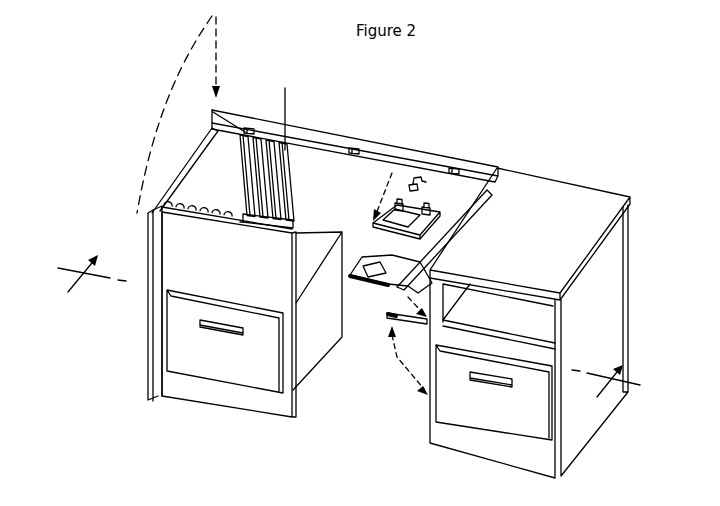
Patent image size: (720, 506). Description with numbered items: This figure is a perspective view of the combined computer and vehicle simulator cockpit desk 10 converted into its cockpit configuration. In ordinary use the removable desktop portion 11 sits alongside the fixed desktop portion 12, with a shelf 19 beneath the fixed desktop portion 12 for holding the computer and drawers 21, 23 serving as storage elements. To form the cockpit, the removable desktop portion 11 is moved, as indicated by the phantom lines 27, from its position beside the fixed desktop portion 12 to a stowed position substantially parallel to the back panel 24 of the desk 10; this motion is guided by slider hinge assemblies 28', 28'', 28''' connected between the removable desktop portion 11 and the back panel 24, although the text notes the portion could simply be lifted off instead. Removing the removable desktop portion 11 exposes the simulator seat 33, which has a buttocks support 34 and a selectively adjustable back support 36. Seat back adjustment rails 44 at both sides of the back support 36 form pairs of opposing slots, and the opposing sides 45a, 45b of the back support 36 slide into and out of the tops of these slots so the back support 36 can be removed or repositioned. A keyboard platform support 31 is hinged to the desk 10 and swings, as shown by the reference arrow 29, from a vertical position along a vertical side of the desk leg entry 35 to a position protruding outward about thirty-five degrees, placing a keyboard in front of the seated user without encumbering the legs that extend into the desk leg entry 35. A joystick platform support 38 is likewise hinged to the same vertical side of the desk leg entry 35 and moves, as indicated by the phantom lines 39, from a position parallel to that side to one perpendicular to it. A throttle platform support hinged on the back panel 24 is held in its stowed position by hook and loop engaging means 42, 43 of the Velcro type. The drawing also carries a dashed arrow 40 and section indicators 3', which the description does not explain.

The desk 10 is at (604, 143).
The removable desktop portion 11 is at (418, 143).
The fixed desktop portion 12 is at (567, 202).
The shelf 19 is at (520, 318).
The drawer 21 is at (492, 408).
The drawer 23 is at (212, 355).
The back panel 24 is at (360, 332).
The phantom lines 27 is at (167, 95).
The slider hinge assembly 28' is at (256, 112).
The slider hinge assembly 28'' is at (372, 129).
The slider hinge assembly 28''' is at (502, 149).
The reference arrow 29 is at (403, 322).
The keyboard platform support 31 is at (450, 225).
The simulator seat 33 is at (297, 177).
The buttocks support 34 is at (312, 232).
The desk leg entry 35 is at (369, 390).
The back support 36 is at (231, 162).
The joystick platform support 38 is at (402, 310).
The phantom lines 39 is at (395, 362).
The plate insertion direction 40 is at (373, 231).
The hook and loop engaging means 42 is at (431, 187).
The hook and loop engaging means 43 is at (408, 225).
The seat back adjustment rails 44 is at (281, 110).
The opposing side of the back support 45a is at (188, 200).
The opposing side of the back support 45b is at (238, 127).
The section line 3' is at (348, 339).